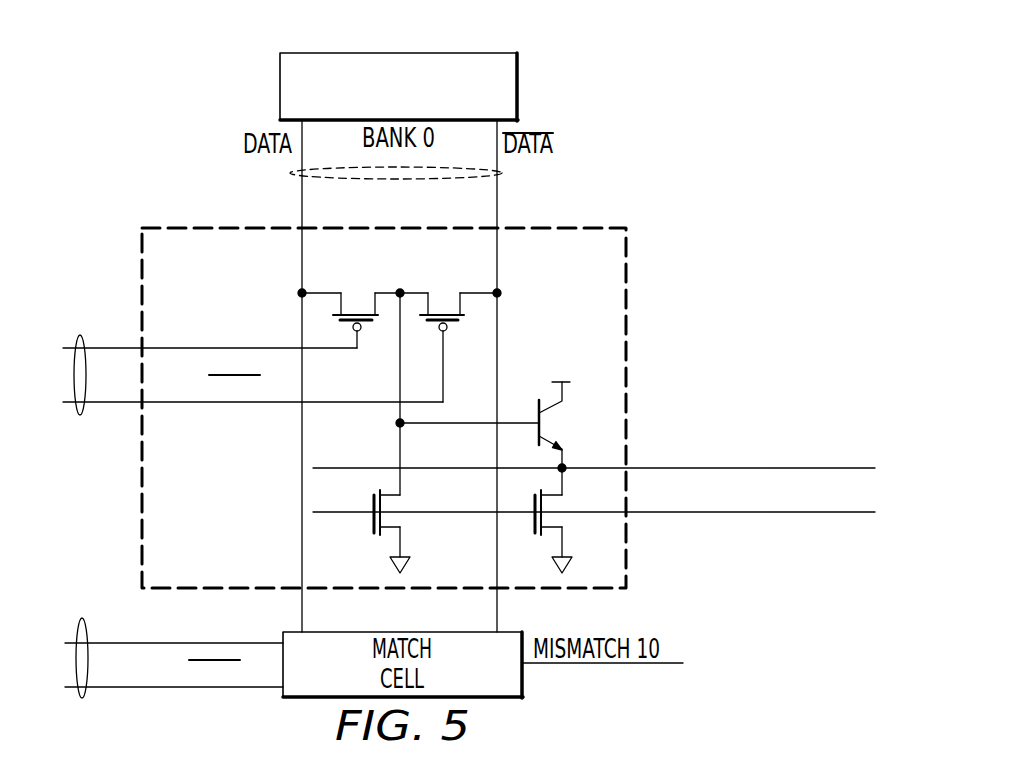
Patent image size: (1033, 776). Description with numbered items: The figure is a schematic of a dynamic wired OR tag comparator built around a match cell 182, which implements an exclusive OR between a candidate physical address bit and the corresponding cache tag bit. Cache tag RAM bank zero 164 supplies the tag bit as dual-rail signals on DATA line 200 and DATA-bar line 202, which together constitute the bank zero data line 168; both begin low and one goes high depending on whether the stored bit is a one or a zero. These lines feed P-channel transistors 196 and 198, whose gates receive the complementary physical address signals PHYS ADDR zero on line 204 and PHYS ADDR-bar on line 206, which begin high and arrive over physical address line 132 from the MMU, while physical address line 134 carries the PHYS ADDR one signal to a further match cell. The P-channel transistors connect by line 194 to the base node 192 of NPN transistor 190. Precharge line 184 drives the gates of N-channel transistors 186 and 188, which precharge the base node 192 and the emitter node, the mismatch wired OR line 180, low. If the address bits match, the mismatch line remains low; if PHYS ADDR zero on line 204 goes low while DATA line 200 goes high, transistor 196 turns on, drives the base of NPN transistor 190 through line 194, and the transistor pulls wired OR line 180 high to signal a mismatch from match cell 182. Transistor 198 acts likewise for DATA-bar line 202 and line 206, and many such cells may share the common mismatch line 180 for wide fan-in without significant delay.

The cache tag RAM BANK 0 164 is at (396, 52).
The Bank 0 Data line 168 is at (505, 172).
The DATA line 200 is at (300, 192).
The DATA-bar line 202 is at (497, 192).
The match cell 182 is at (652, 313).
The P-channel transistor 196 is at (360, 288).
The P-channel transistor 198 is at (440, 288).
The line 194 is at (398, 397).
The base node 192 is at (408, 427).
The NPN transistor 190 is at (554, 413).
The MISMATCH 00 wired OR line 180 is at (822, 469).
The precharge line 184 is at (787, 514).
The N-channel transistor 186 is at (372, 536).
The N-channel transistor 188 is at (532, 536).
The line 132 is at (78, 326).
The PHYS ADDR 0 line 204 is at (122, 346).
The PHYS ADDR-bar line 206 is at (120, 405).
The line 134 is at (79, 610).